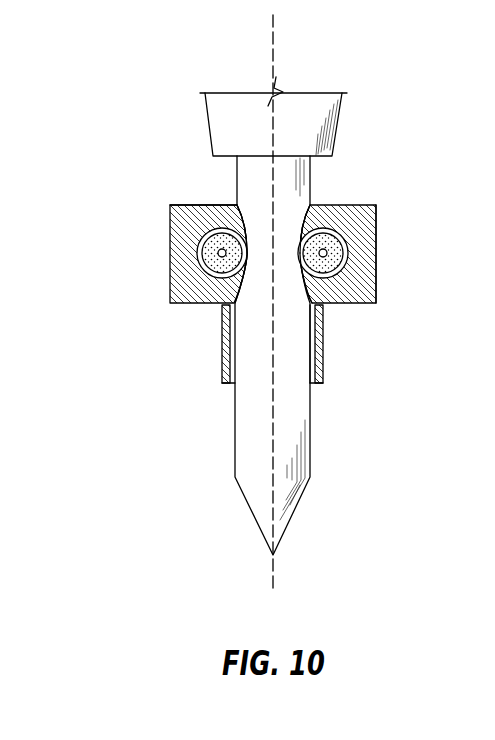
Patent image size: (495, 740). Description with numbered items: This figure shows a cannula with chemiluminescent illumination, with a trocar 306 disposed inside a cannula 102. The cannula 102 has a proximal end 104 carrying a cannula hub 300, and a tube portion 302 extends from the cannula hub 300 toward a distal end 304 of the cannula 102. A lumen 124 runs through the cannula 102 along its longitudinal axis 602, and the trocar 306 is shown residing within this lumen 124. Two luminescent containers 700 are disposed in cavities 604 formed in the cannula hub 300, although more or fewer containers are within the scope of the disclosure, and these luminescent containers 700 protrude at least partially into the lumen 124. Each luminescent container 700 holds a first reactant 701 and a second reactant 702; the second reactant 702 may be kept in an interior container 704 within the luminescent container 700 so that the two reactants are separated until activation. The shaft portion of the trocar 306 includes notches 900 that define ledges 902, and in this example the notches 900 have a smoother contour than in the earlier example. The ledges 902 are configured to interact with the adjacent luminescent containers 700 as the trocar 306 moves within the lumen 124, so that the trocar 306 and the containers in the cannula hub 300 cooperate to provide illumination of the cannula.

The cannula 102 is at (158, 291).
The proximal end 104 is at (387, 222).
The lumen 124 is at (228, 394).
The cannula hub 300 is at (377, 251).
The tube portion 302 is at (323, 340).
The distal end 304 is at (336, 372).
The trocar 306 is at (353, 119).
The longitudinal axis 602 is at (272, 62).
The cavities 604 is at (218, 254).
The luminescent containers 700 is at (208, 216).
The first reactant 701 is at (212, 252).
The second reactant 702 is at (208, 240).
The interior container 704 is at (212, 235).
The notches 900 is at (215, 230).
The ledges 902 is at (230, 305).